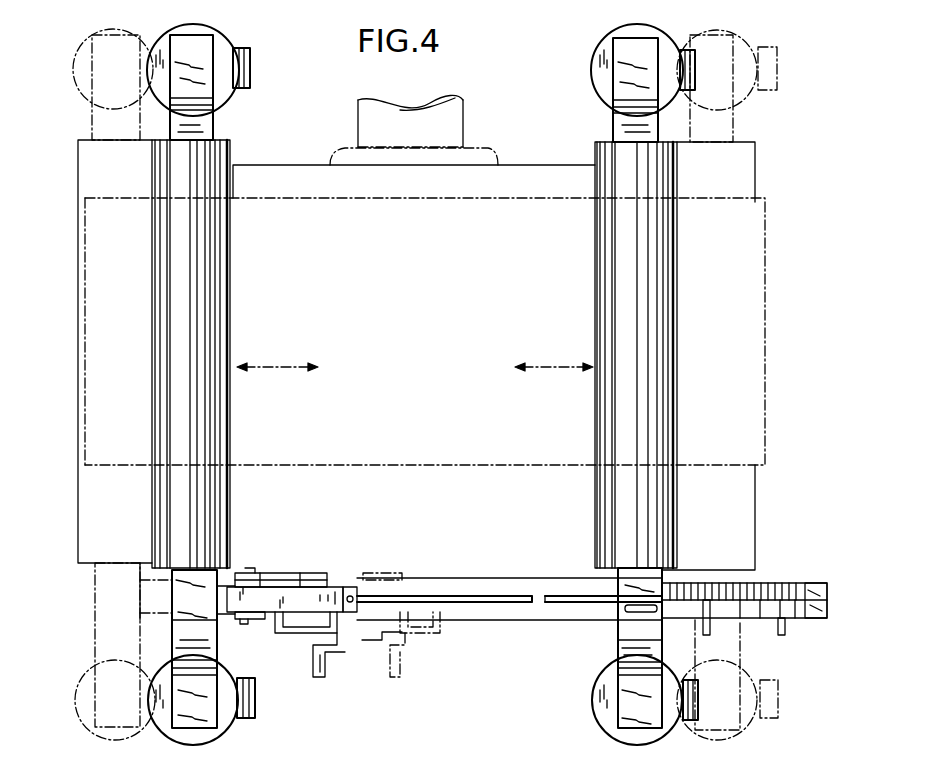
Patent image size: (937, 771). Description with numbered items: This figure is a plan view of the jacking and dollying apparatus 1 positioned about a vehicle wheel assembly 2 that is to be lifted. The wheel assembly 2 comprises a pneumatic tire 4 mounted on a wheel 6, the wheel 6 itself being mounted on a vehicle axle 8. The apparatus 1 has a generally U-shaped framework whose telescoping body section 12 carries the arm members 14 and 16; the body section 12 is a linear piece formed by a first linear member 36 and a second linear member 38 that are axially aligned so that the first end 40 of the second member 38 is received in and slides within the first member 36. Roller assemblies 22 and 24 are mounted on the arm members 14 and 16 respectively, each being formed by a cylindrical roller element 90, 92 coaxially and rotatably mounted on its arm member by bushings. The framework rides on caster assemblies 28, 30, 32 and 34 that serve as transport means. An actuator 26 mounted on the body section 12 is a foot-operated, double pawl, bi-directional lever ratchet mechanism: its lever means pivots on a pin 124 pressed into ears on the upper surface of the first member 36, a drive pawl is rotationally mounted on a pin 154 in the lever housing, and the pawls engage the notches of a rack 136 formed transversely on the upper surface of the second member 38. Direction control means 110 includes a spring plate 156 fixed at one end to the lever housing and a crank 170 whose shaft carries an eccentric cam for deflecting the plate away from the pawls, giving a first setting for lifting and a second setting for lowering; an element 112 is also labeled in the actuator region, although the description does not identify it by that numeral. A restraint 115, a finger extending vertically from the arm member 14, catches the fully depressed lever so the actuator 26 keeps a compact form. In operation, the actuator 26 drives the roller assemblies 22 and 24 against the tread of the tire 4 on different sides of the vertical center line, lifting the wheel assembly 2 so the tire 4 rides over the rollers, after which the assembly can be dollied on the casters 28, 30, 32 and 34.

The apparatus 1 is at (300, 720).
The wheel assembly 2 is at (765, 262).
The pneumatic tire 4 is at (118, 415).
The wheel 6 is at (287, 163).
The vehicle axle 8 is at (463, 140).
The telescoping body section 12 is at (468, 612).
The arm member 14 is at (636, 588).
The arm member 16 is at (170, 597).
The roller assembly 22 is at (665, 503).
The roller assembly 24 is at (172, 503).
The actuator 26 is at (333, 617).
The caster assembly 28 is at (695, 70).
The caster assembly 30 is at (690, 725).
The caster assembly 32 is at (246, 722).
The caster assembly 34 is at (250, 58).
The first linear member 36 is at (540, 615).
The second linear member 38 is at (802, 562).
The first end 40 is at (827, 612).
The cylindrical roller element 90 is at (612, 308).
The cylindrical roller element 92 is at (215, 312).
The direction control means 110 is at (362, 703).
The slide bar 112 is at (488, 595).
The restraint 115 is at (630, 612).
The pin 124 is at (240, 628).
The rack 136 is at (742, 615).
The pin 154 is at (275, 575).
The spring plate 156 is at (312, 590).
The crank 170 is at (392, 678).